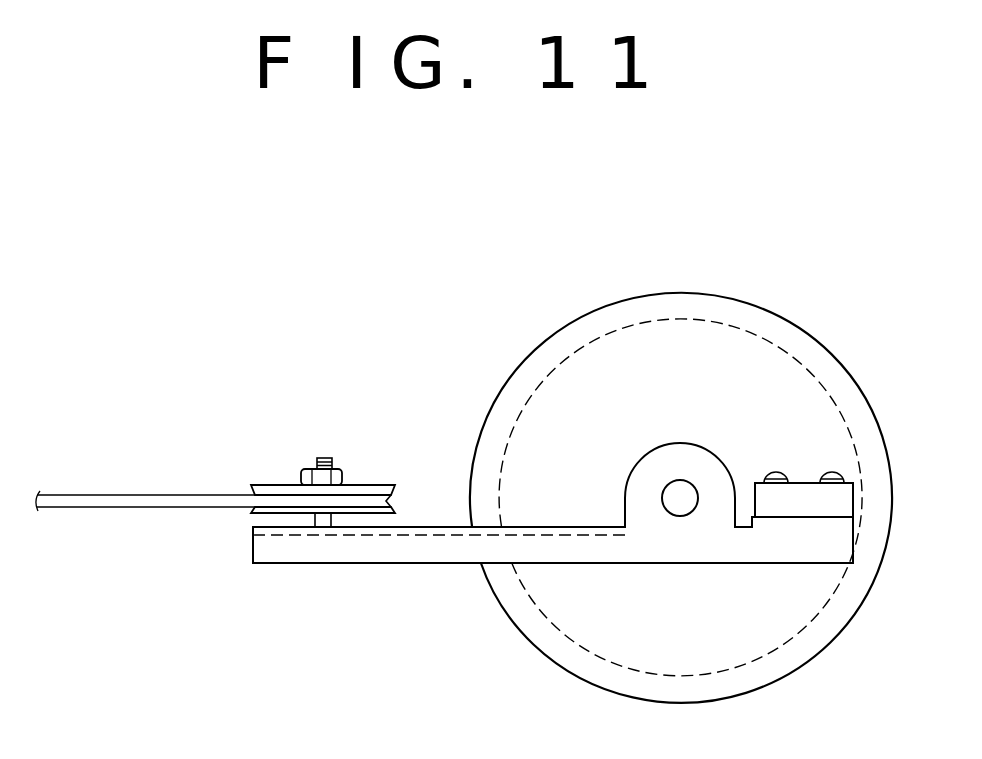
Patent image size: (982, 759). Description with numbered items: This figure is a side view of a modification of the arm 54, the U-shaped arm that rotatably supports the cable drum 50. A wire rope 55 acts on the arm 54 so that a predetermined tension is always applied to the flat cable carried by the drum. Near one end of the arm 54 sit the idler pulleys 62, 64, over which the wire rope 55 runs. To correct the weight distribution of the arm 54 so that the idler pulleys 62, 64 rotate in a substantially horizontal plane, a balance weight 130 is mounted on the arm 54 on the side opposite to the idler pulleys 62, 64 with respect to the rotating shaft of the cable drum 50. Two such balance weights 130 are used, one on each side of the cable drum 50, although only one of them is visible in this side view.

The cable drum 50 is at (675, 293).
The arm 54 is at (382, 563).
The wire rope 55 is at (130, 497).
The idler pulley 62 is at (323, 463).
The idler pulley 64 is at (282, 485).
The balance weight 130 is at (800, 492).